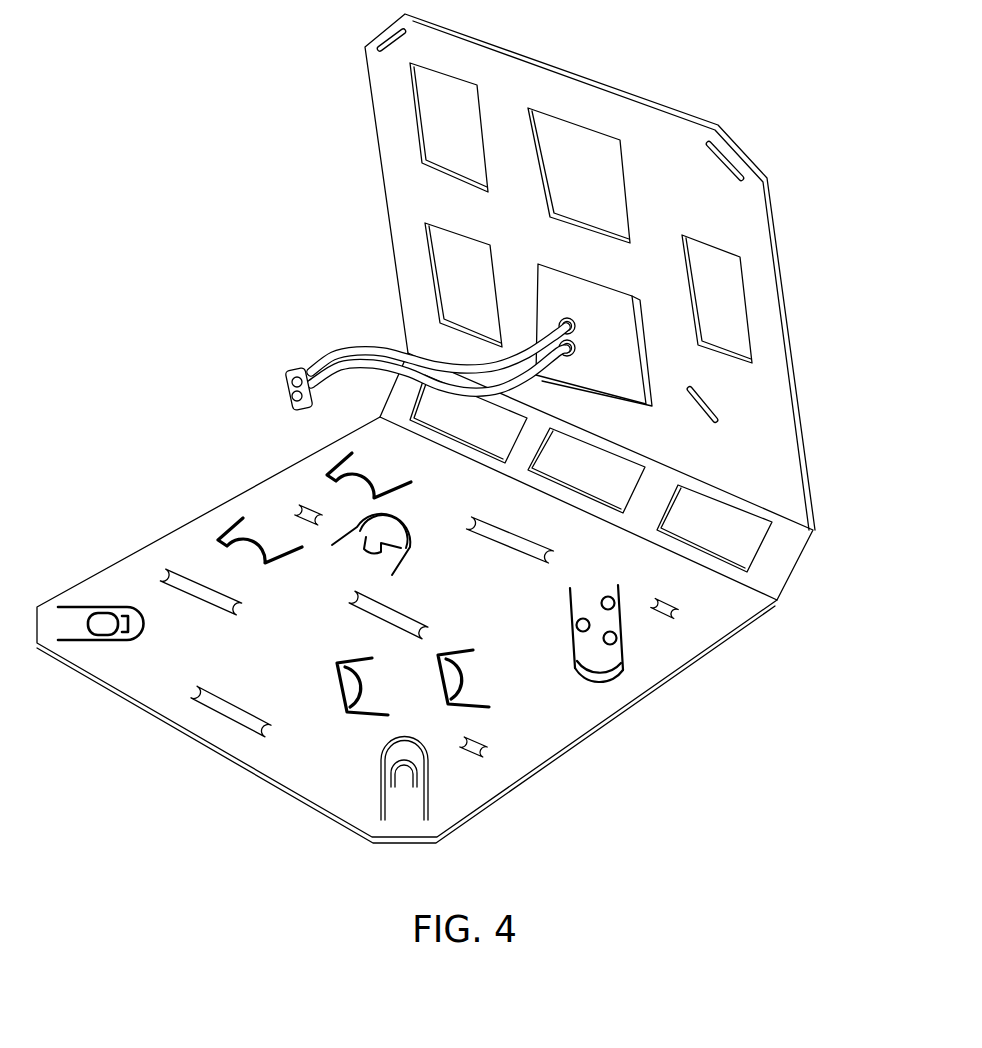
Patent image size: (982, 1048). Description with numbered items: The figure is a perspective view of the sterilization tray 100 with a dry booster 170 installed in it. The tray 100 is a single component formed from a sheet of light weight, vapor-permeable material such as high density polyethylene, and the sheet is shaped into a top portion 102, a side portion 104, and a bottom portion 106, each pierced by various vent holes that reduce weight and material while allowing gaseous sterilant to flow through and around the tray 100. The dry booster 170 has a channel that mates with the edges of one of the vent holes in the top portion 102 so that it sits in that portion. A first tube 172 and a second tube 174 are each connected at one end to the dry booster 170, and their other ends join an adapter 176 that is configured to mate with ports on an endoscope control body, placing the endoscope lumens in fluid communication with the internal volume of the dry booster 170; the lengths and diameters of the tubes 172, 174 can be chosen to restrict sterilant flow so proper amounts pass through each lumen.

The tray 100 is at (463, 428).
The top portion 102 is at (788, 325).
The side portion 104 is at (800, 560).
The bottom portion 106 is at (668, 677).
The dry booster 170 is at (586, 305).
The first tube 172 is at (362, 348).
The second tube 174 is at (348, 380).
The adapter 176 is at (292, 378).